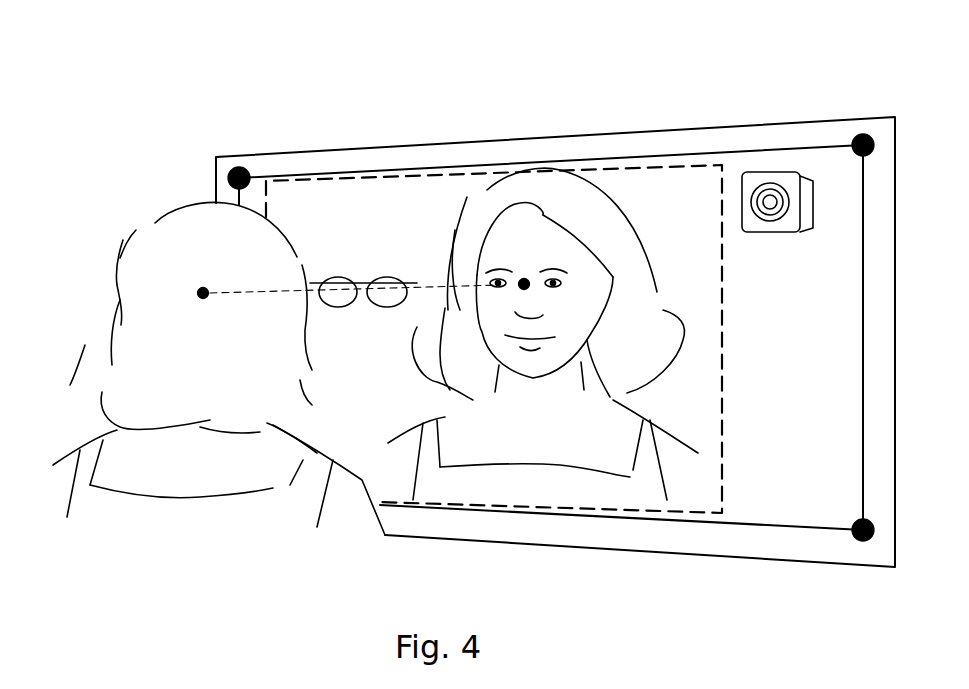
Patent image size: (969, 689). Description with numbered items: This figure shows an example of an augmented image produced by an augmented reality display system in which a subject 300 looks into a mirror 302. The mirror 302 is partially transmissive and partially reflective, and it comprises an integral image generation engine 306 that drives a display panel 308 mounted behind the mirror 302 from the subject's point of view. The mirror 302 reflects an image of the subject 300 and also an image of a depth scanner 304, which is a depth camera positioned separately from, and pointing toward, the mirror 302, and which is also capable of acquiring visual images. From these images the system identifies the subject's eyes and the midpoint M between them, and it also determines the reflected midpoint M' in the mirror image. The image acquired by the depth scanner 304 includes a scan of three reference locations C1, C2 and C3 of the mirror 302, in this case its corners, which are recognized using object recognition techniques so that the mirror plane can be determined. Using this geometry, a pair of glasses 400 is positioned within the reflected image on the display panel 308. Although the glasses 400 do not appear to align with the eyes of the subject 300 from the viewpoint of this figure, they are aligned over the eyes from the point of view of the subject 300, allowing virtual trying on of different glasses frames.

The subject 300 is at (188, 222).
The mirror 302 is at (263, 190).
The depth scanner 304 is at (757, 183).
The image generation engine 306 is at (757, 128).
The display panel 308 is at (427, 178).
The pair of glasses 400 is at (388, 277).
The midpoint between the eyes M is at (263, 282).
The reflected midpoint M' is at (525, 254).
The reference location C1 is at (232, 172).
The reference location C2 is at (864, 134).
The reference location C3 is at (852, 540).